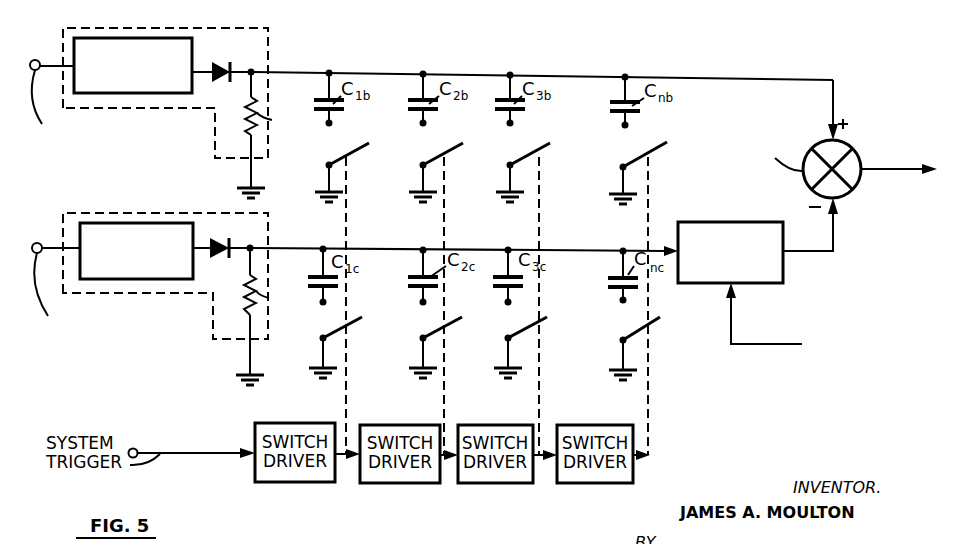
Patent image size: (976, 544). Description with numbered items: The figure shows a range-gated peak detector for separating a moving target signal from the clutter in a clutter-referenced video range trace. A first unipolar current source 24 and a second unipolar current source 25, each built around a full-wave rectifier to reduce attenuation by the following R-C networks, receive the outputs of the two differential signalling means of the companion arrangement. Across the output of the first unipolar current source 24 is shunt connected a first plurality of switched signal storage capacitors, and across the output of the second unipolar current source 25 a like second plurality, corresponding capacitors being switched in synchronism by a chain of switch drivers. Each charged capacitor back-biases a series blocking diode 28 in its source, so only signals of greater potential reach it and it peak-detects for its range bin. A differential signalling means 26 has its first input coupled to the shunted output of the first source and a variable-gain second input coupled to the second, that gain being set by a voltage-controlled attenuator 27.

The first unipolar current source 24 is at (169, 112).
The second unipolar current source 25 is at (253, 236).
The differential signalling means 26 is at (849, 162).
The voltage-controlled attenuator 27 is at (770, 279).
The series blocking diode 28 is at (217, 82).